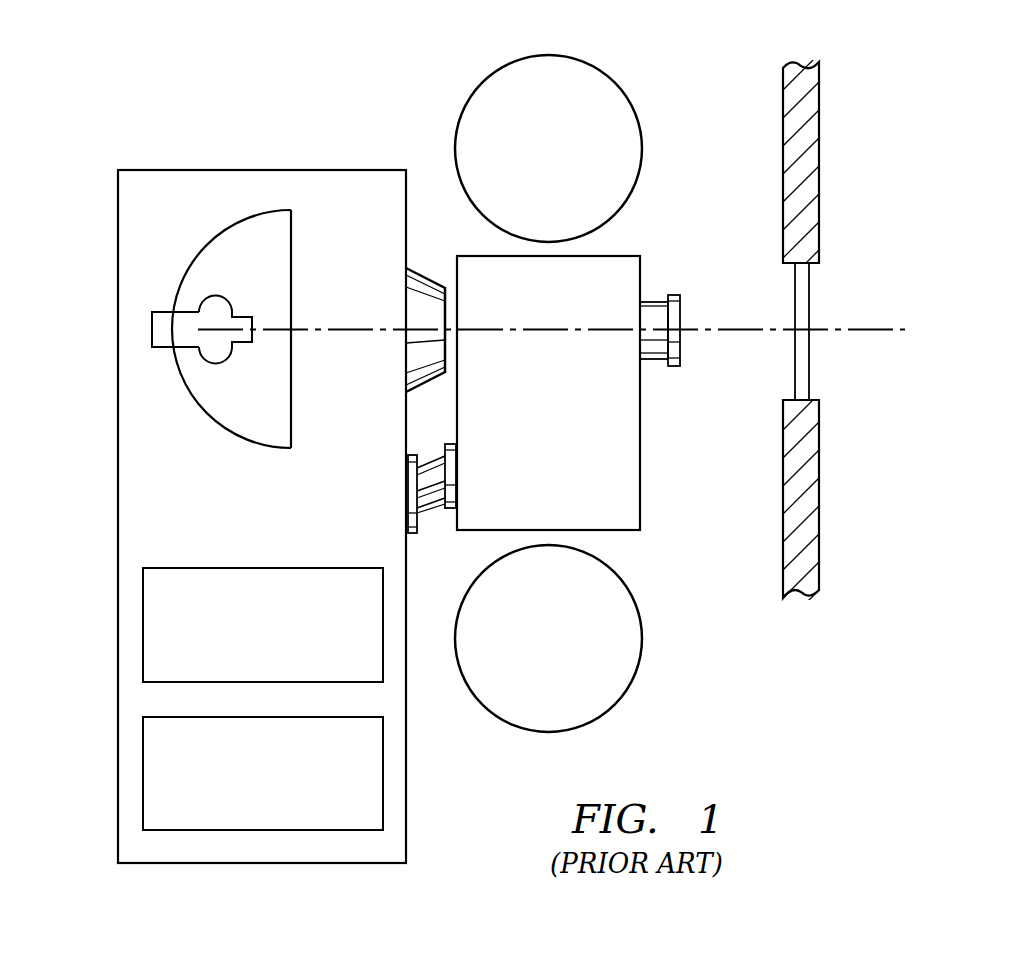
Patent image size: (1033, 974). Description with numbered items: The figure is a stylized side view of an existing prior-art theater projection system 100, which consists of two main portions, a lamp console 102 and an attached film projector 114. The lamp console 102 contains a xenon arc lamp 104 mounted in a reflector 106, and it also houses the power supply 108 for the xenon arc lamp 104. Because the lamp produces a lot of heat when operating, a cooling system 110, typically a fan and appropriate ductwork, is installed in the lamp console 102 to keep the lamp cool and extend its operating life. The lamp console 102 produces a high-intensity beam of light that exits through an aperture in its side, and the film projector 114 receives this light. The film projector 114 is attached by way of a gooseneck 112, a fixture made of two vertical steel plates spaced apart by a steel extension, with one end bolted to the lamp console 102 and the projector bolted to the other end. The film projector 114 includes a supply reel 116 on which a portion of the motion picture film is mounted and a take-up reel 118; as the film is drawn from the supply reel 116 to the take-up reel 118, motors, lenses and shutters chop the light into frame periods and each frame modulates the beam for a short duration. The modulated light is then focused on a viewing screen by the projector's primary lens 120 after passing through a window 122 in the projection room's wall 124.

The theater projection system 100 is at (318, 130).
The lamp console 102 is at (118, 523).
The xenon arc lamp 104 is at (172, 312).
The reflector 106 is at (230, 435).
The power supply 108 is at (285, 639).
The cooling system 110 is at (285, 786).
The gooseneck 112 is at (423, 513).
The film projector 114 is at (570, 442).
The supply reel 116 is at (568, 160).
The take-up reel 118 is at (570, 650).
The primary lens 120 is at (682, 348).
The window 122 is at (810, 353).
The wall 124 is at (820, 173).